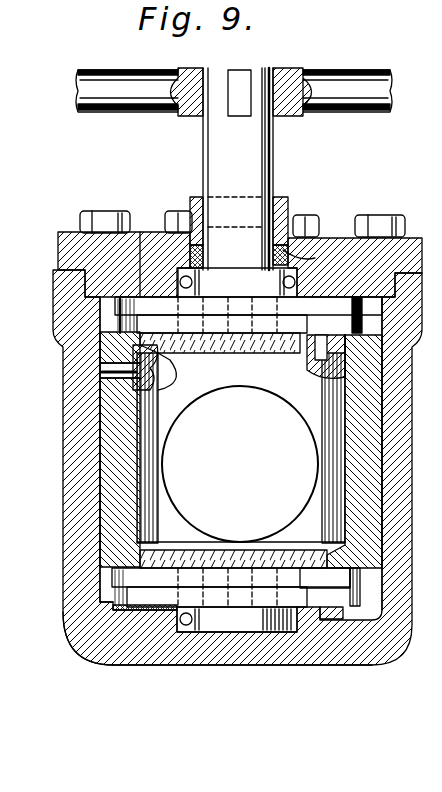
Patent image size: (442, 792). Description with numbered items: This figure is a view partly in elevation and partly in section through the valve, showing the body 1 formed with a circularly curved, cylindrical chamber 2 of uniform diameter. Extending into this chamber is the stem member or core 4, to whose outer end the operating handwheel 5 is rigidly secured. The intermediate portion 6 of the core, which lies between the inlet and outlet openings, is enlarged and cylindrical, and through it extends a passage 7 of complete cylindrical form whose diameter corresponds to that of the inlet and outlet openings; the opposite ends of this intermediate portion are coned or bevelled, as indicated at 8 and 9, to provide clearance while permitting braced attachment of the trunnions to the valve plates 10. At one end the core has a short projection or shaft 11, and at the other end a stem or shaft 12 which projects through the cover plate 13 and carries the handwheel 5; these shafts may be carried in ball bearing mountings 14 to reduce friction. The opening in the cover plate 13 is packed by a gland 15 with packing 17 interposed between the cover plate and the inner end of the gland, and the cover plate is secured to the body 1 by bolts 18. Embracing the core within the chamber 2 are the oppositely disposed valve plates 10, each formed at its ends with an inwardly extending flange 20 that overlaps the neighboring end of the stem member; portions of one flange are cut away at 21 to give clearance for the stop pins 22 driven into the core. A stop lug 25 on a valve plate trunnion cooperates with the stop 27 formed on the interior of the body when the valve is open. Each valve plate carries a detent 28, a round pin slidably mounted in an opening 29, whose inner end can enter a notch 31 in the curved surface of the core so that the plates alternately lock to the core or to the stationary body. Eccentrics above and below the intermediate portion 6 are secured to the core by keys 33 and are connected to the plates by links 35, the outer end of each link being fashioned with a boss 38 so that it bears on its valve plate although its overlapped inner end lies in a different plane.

The body 1 is at (403, 453).
The chamber 2 is at (380, 505).
The stem member or core 4 is at (343, 412).
The handwheel 5 is at (110, 112).
The intermediate portion 6 is at (340, 537).
The passage 7 is at (308, 425).
The coned or bevelled end 8 is at (226, 350).
The coned or bevelled end 9 is at (200, 553).
The valve plates 10 is at (370, 478).
The short projection or shaft 11 is at (222, 665).
The stem or shaft 12 is at (276, 147).
The cover plate 13 is at (341, 238).
The ball bearing mountings 14 is at (190, 632).
The gland 15 is at (196, 197).
The packing 17 is at (285, 255).
The bolts 18 is at (88, 211).
The flange 20 is at (145, 340).
The cut away portion 21 is at (395, 352).
The stop pins 22 is at (295, 365).
The stop lug 25 is at (115, 640).
The stop lug 27 is at (118, 615).
The detent 28 is at (162, 398).
The openings 29 is at (120, 372).
The notches 31 is at (158, 363).
The keys 33 is at (230, 385).
The links 35 is at (140, 275).
The boss 38 is at (290, 350).